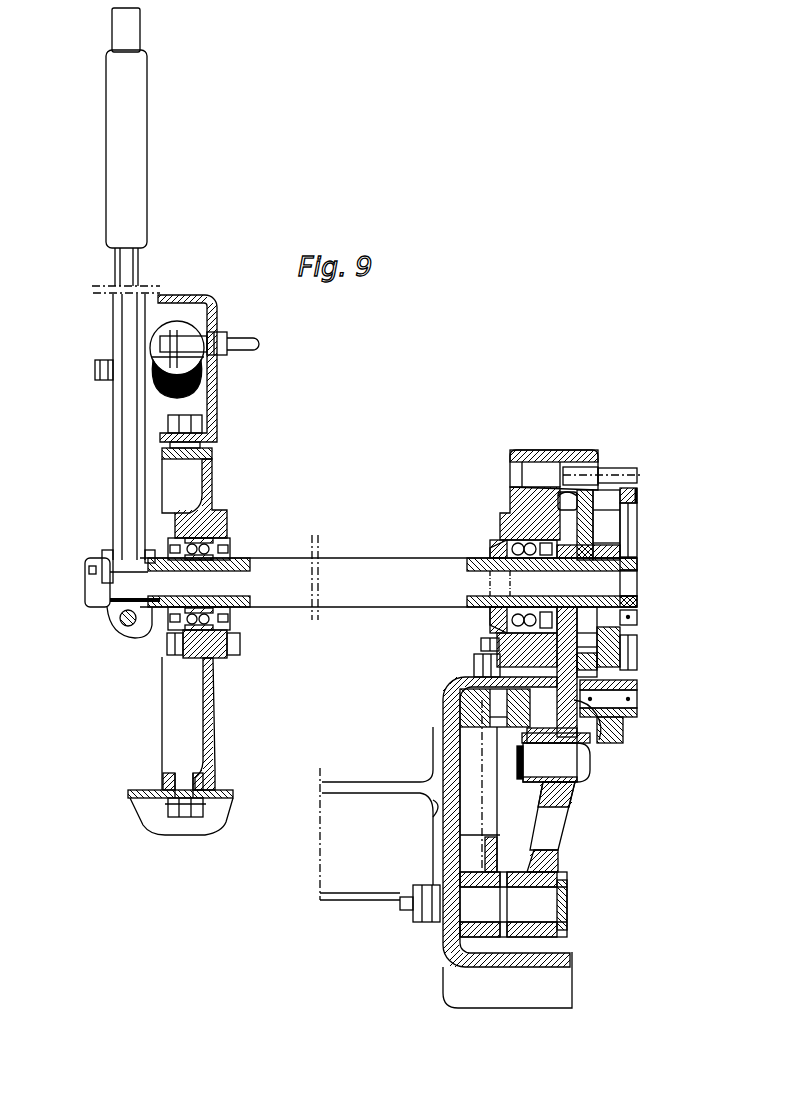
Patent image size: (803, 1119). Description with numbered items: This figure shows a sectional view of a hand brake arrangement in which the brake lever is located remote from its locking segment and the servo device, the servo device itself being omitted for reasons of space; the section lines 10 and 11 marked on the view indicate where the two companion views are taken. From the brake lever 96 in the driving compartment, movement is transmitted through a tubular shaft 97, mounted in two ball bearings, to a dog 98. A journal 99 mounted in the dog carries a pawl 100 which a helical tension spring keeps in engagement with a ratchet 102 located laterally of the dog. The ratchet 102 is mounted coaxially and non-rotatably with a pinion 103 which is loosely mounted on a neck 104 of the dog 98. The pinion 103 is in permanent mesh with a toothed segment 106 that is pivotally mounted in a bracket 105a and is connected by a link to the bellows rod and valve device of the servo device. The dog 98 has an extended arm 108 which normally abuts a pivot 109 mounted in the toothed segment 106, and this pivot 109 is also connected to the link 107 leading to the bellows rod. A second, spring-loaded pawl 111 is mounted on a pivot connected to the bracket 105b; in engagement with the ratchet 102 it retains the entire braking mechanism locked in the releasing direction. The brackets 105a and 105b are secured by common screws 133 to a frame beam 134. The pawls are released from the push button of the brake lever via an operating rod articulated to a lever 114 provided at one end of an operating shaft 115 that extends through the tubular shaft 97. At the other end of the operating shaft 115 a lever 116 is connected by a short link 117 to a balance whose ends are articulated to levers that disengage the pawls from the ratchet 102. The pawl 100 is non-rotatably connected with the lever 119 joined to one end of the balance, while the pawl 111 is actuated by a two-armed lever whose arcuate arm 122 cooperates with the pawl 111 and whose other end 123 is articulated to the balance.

The section line 10— 10 is at (90, 447).
The section line 11— 11 is at (626, 690).
The brake lever 96 is at (140, 270).
The tubular shaft 97 is at (333, 566).
The dog 98 is at (633, 648).
The journal 99 is at (617, 722).
The pawl 100 is at (595, 742).
The ratchet 102 is at (594, 522).
The pinion 103 is at (633, 667).
The neck 104 is at (631, 631).
The bracket 105a is at (560, 878).
The bracket 105b is at (530, 449).
The toothed segment 106 is at (597, 761).
The link 107 is at (585, 755).
The extended arm 108 is at (573, 786).
The pivot 109 is at (545, 764).
The pawl 111 is at (588, 451).
The lever 114 is at (89, 608).
The operating shaft 115 is at (140, 608).
The lever 116 is at (637, 600).
The short link 117 is at (638, 622).
The lever 119 is at (625, 717).
The arm 122 is at (633, 498).
The other end 123 is at (630, 524).
The common screws 133 is at (482, 644).
The frame beam 134 is at (447, 684).